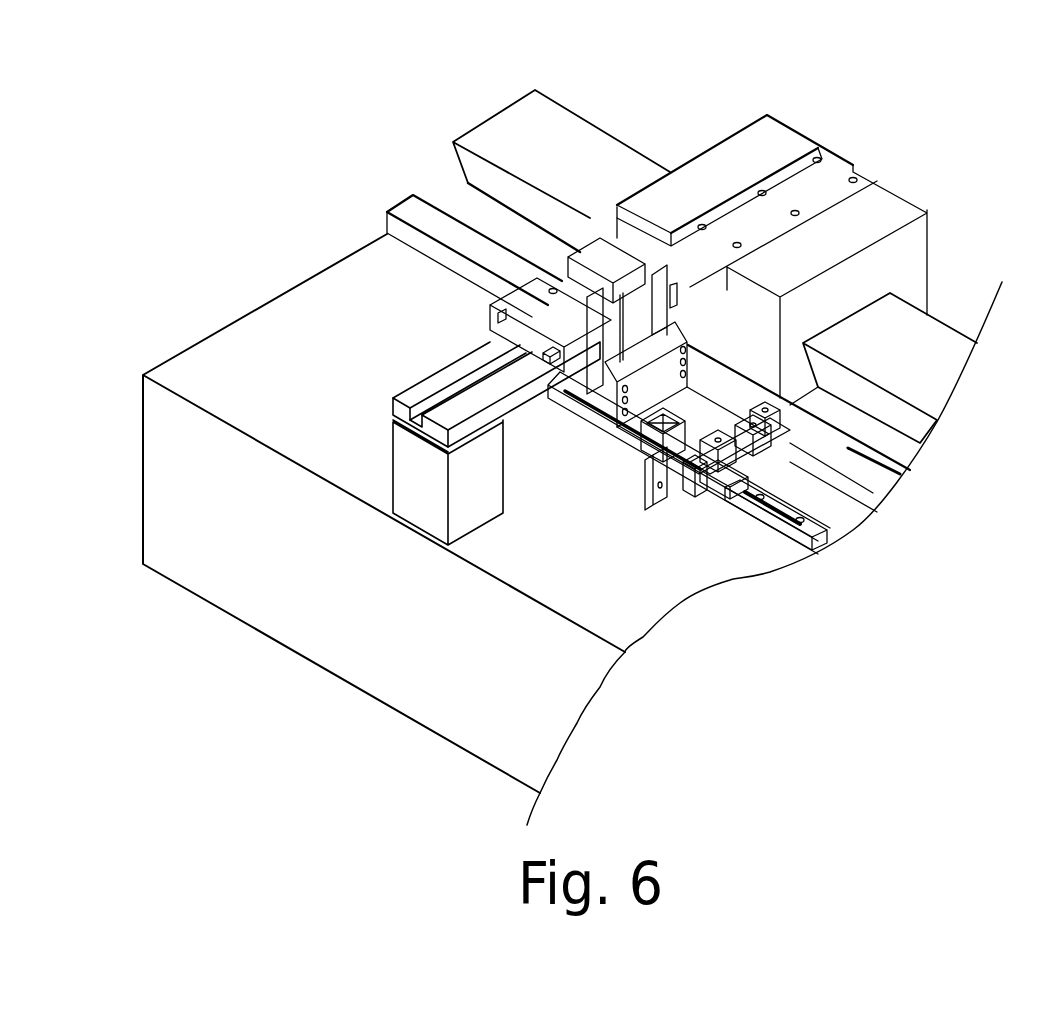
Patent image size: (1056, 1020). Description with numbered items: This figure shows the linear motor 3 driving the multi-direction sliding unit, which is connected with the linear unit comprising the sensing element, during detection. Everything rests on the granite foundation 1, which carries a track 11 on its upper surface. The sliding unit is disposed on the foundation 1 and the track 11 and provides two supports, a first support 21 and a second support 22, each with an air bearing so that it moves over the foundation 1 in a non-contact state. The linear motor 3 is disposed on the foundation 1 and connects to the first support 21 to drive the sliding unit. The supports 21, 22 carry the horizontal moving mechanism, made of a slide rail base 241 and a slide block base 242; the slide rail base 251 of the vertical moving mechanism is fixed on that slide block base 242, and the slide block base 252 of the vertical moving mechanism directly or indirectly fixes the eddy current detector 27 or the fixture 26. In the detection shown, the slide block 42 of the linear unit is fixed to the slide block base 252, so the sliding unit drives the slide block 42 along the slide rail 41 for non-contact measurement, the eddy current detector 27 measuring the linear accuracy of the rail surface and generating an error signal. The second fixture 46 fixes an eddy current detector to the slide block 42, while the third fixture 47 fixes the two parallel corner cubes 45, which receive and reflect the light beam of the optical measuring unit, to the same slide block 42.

The foundation 1 is at (232, 340).
The linear motor 3 is at (403, 212).
The track 11 is at (500, 122).
The first support 21 is at (897, 205).
The support 22 is at (416, 505).
The fixture 26 is at (643, 437).
The eddy current detector 27 is at (647, 458).
The slide rail 41 is at (813, 527).
The slide block 42 is at (730, 487).
The corner cube 45 is at (767, 440).
The second fixture 46 is at (653, 493).
The third fixture 47 is at (690, 468).
The slide rail base 241 is at (424, 388).
The slide block base 242 is at (512, 303).
The slide rail base 251 is at (588, 250).
The slide block base 252 is at (675, 335).